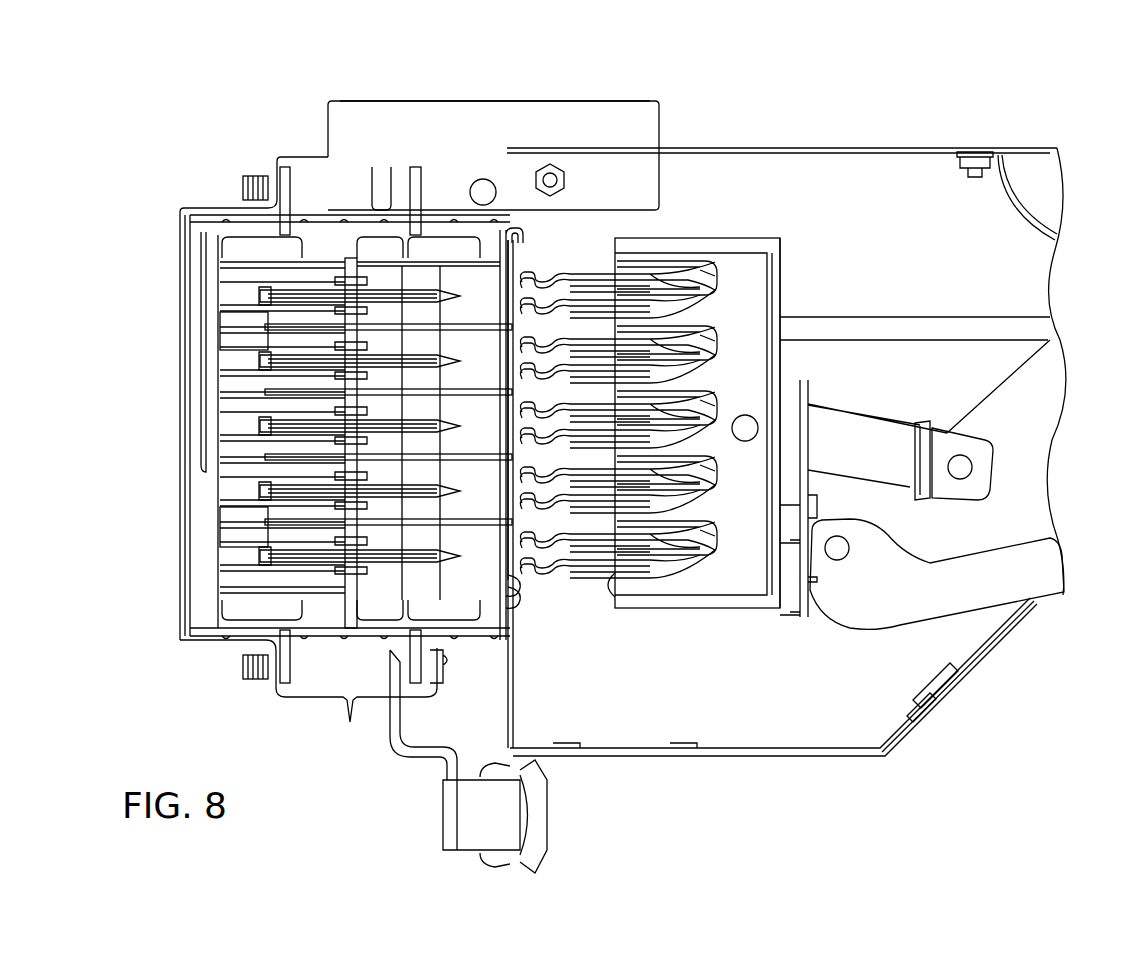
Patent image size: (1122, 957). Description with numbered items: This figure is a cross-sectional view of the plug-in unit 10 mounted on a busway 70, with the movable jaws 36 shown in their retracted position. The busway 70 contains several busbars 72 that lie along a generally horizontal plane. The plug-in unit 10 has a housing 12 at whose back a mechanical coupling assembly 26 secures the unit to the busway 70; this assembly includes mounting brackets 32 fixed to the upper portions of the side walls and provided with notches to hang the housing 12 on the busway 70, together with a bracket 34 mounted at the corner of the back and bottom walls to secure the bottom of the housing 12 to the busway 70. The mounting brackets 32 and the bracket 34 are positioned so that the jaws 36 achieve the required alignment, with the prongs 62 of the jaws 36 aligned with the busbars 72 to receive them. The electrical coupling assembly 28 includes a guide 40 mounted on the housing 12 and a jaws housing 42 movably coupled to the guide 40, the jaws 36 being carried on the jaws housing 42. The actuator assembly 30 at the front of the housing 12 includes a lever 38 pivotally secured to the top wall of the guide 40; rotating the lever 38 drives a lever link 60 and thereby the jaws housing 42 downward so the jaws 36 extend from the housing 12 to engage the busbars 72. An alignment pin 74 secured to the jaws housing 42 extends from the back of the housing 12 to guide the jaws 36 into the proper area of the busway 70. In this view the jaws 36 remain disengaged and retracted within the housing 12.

The plug-in unit 10 is at (860, 140).
The housing 12 is at (825, 757).
The mechanical coupling assembly 26 is at (328, 100).
The electrical coupling assembly 28 is at (697, 237).
The actuator assembly 30 is at (950, 620).
The mounting bracket 32 is at (437, 110).
The bracket 34 is at (393, 722).
The jaws 36 is at (590, 283).
The lever 38 is at (913, 665).
The guide 40 is at (807, 390).
The jaws housing 42 is at (780, 257).
The lever link 60 is at (1012, 398).
The prongs 62 is at (521, 505).
The busway 70 is at (372, 439).
The busbars 72 is at (267, 490).
The alignment pin 74 is at (790, 537).